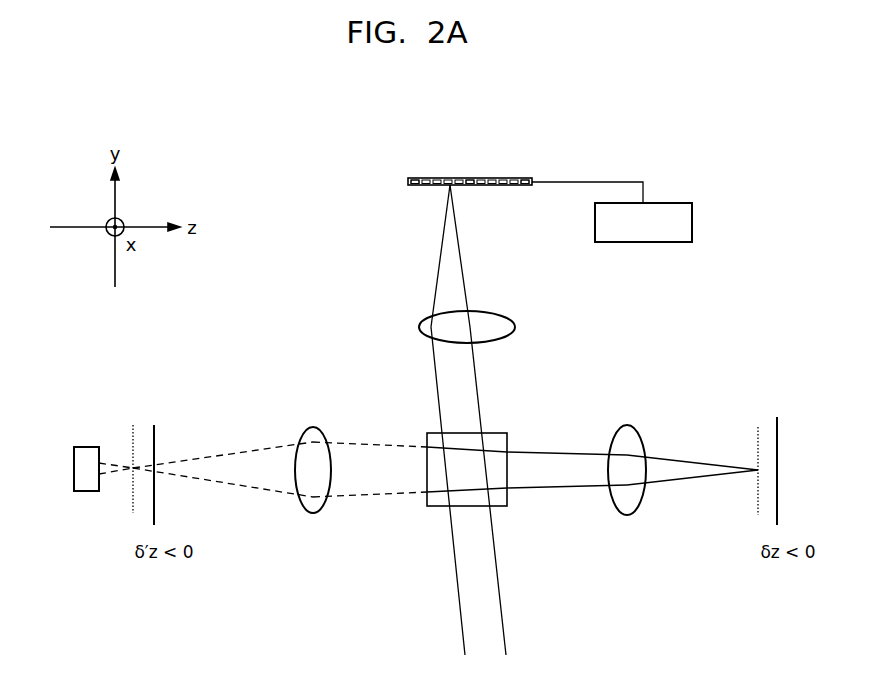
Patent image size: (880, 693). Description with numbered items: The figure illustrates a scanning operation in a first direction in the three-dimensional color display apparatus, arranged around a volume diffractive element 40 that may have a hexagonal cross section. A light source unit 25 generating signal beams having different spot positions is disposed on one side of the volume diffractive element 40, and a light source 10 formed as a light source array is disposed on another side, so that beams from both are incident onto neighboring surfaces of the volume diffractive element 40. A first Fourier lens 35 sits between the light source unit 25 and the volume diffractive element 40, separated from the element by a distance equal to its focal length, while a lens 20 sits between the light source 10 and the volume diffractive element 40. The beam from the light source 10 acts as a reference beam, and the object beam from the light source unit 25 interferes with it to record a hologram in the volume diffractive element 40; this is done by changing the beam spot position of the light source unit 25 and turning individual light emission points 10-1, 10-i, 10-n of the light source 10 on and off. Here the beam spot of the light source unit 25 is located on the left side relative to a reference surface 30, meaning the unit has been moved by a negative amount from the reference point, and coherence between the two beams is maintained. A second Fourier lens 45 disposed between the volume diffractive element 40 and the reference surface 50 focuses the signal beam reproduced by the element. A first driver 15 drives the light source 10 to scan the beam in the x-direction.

The light source 10 is at (406, 196).
The light emission point 10-1 is at (412, 178).
The light emission point 10-i is at (470, 178).
The light emission point 10-n is at (525, 178).
The first driver 15 is at (692, 222).
The lens 20 is at (515, 327).
The light source unit 25 is at (85, 447).
The reference surface 30 is at (156, 424).
The first Fourier lens 35 is at (313, 427).
The volume diffractive element 40 is at (497, 433).
The second Fourier lens 45 is at (627, 425).
The reference surface 50 is at (778, 420).